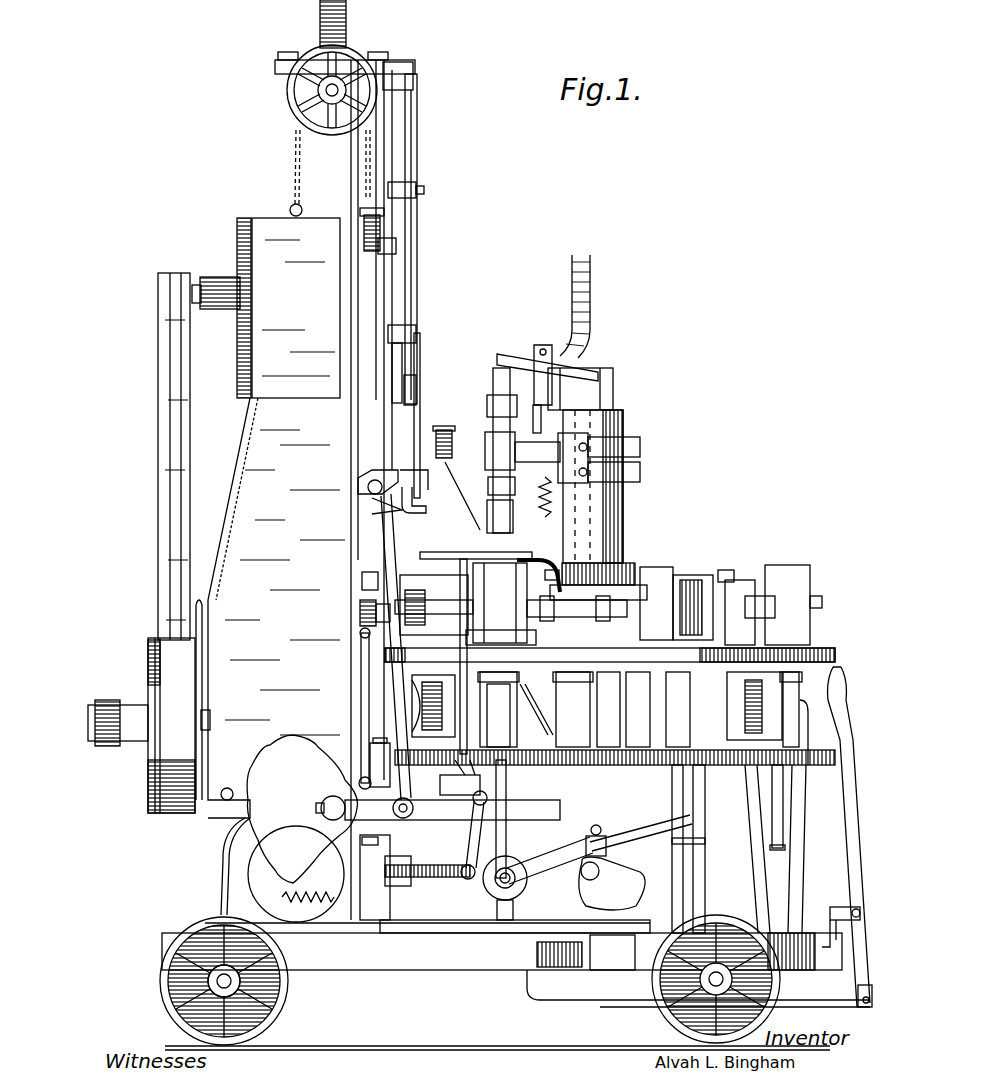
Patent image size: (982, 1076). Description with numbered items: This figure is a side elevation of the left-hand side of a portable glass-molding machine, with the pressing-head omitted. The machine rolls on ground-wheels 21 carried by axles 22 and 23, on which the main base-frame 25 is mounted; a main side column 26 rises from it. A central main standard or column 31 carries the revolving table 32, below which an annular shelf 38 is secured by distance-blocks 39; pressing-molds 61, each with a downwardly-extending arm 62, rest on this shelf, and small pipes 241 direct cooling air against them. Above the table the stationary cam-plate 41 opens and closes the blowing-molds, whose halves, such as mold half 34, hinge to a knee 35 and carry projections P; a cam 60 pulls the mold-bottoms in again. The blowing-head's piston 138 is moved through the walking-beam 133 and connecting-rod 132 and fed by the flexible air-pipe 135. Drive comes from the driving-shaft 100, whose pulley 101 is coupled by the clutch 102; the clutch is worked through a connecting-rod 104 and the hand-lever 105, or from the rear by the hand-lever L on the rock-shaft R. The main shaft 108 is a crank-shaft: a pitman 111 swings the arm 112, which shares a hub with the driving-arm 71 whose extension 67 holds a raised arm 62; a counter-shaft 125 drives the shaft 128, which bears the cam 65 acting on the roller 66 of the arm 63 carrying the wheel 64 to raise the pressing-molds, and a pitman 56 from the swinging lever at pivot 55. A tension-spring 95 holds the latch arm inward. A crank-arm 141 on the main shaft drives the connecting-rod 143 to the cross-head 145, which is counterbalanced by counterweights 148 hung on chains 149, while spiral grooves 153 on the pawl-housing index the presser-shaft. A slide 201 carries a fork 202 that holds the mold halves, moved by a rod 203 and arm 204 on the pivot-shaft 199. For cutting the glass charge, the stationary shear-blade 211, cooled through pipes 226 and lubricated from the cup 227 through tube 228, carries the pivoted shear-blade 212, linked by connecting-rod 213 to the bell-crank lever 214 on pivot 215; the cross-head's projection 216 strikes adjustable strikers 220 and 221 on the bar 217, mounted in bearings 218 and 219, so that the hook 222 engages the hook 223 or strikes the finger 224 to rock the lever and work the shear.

The spiral grooves 153 is at (346, 20).
The chains or cords 149 is at (292, 135).
The bearing 218 is at (410, 78).
The bar 217 is at (418, 140).
The adjustable striker 220 is at (412, 190).
The cross-head 145 is at (386, 230).
The projection 216 is at (393, 246).
The counterweights 148 is at (288, 308).
The adjustable striker 221 is at (412, 330).
The bearing 219 is at (415, 388).
The hook 222 is at (420, 417).
The lubricating-cup 227 is at (461, 442).
The hook 223 is at (430, 478).
The tube 228 is at (438, 503).
The pivot 215 is at (368, 486).
The finger of bell-crank lever 224 is at (372, 500).
The bell-crank lever 214 is at (370, 527).
The connecting-rod 213 is at (452, 552).
The second shear-blade 212 is at (538, 556).
The pipes 226 is at (434, 593).
The stationary shear blade 211 is at (546, 604).
The fork 202 is at (372, 580).
The slide 201 is at (360, 612).
The connecting-rod 143 is at (380, 663).
The rod 203 is at (362, 718).
The arm 204 is at (360, 778).
The pivot-shaft 199 is at (227, 788).
The main shaft 108 is at (324, 800).
The crank-arm 141 is at (302, 828).
The rock-shaft R is at (238, 830).
The tension-spring 95 is at (312, 906).
The ground-wheels 21 is at (170, 1010).
The axle 22 is at (218, 981).
The main base-frame 25 is at (438, 968).
The connecting-rod 104 is at (568, 1002).
The axle 23 is at (690, 1008).
The central main standard or column 31 is at (624, 512).
The main side column 26 is at (238, 470).
The hand-lever L is at (198, 600).
The driving-shaft 100 is at (92, 706).
The pulley 101 is at (148, 792).
The clutch 102 is at (210, 712).
The flexible air-pipe 135 is at (592, 270).
The walking-beam 133 is at (580, 360).
The connecting-rod 132 is at (614, 392).
The piston of blowing-head 138 is at (494, 398).
The stationary cam-plate 41 is at (636, 583).
The revolving table 32 is at (826, 654).
The cam 60 is at (676, 603).
The knee 35 is at (740, 578).
The mold half 34 is at (810, 592).
The projections P is at (824, 602).
The pressing-molds 61 is at (810, 694).
The driving-arm 71 is at (556, 709).
The annular shelf 38 is at (725, 765).
The arm 62 is at (784, 815).
The small pipes 241 is at (706, 868).
The distance-blocks 39 is at (810, 755).
The hand-lever 105 is at (842, 680).
The extension 67 is at (458, 781).
The pivot 55 is at (478, 805).
The pitman 111 is at (463, 819).
The antifriction-wheel 64 is at (505, 905).
The arm 63 is at (560, 852).
The arm 112 is at (641, 833).
The antifriction-roller 66 is at (623, 858).
The cam 65 is at (612, 883).
The shaft 128 is at (585, 877).
The counter-shaft 125 is at (425, 878).
The pitman 56 is at (466, 880).